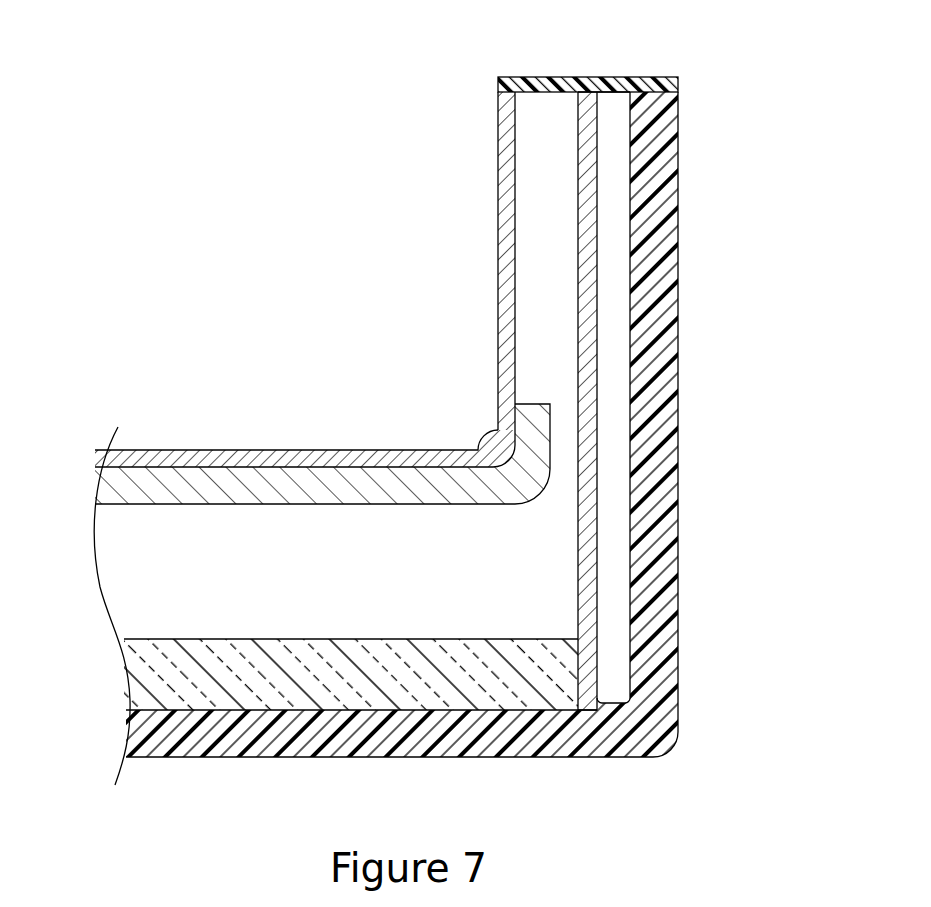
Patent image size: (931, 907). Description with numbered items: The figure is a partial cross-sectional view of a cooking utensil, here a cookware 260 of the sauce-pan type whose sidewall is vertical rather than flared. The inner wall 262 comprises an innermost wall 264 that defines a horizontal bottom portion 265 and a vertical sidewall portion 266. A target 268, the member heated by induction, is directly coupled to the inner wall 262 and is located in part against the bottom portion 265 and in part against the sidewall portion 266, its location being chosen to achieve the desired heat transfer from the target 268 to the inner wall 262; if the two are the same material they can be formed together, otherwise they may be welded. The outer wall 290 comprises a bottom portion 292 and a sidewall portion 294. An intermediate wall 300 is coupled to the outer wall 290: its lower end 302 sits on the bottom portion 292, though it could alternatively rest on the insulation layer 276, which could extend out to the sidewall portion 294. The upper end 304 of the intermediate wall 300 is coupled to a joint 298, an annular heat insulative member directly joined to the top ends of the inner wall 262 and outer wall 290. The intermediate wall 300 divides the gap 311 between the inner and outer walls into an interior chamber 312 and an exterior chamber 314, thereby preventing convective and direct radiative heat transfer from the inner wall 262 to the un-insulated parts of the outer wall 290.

The cookware 260 is at (150, 394).
The inner wall 262 is at (220, 430).
The innermost wall 264 is at (387, 442).
The bottom portion 265 is at (262, 449).
The sidewall portion 266 is at (497, 198).
The target 268 is at (254, 494).
The insulation layer 276 is at (208, 698).
The outer wall 290 is at (685, 664).
The bottom portion 292 is at (327, 752).
The sidewall portion 294 is at (673, 347).
The joint 298 is at (547, 77).
The intermediate wall 300 is at (578, 520).
The lower end 302 is at (597, 705).
The upper end 304 is at (612, 77).
The gap 311 is at (140, 563).
The interior chamber 312 is at (402, 581).
The exterior chamber 314 is at (612, 195).